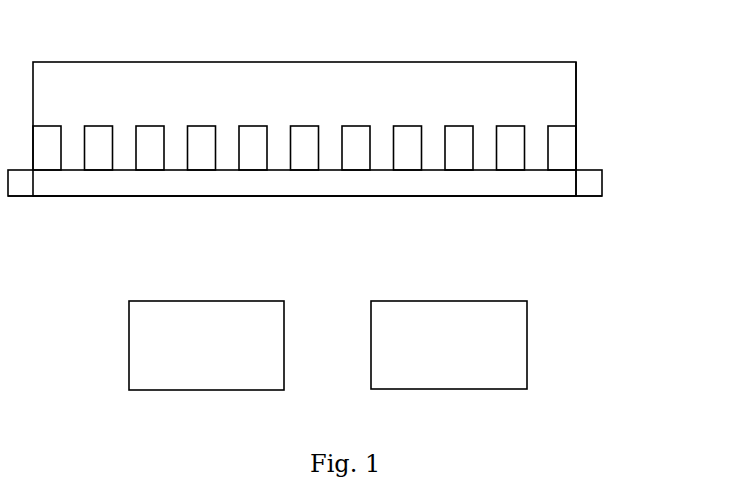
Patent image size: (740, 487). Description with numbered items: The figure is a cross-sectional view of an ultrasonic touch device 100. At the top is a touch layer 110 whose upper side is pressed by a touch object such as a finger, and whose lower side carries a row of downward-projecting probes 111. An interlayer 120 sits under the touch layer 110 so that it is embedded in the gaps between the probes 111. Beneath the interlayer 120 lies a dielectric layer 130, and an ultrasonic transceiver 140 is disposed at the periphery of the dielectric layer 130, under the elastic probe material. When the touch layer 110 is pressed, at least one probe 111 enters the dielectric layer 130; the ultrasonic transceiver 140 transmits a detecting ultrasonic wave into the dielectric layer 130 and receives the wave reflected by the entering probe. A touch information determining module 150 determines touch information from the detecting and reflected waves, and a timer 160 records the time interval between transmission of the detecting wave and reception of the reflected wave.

The ultrasonic touch device 100 is at (80, 48).
The touch layer 110 is at (308, 62).
The probes 111 is at (482, 129).
The interlayer 120 is at (576, 147).
The dielectric layer 130 is at (397, 197).
The ultrasonic transceiver 140 is at (602, 183).
The touch information determining module 150 is at (206, 345).
The timer 160 is at (449, 345).